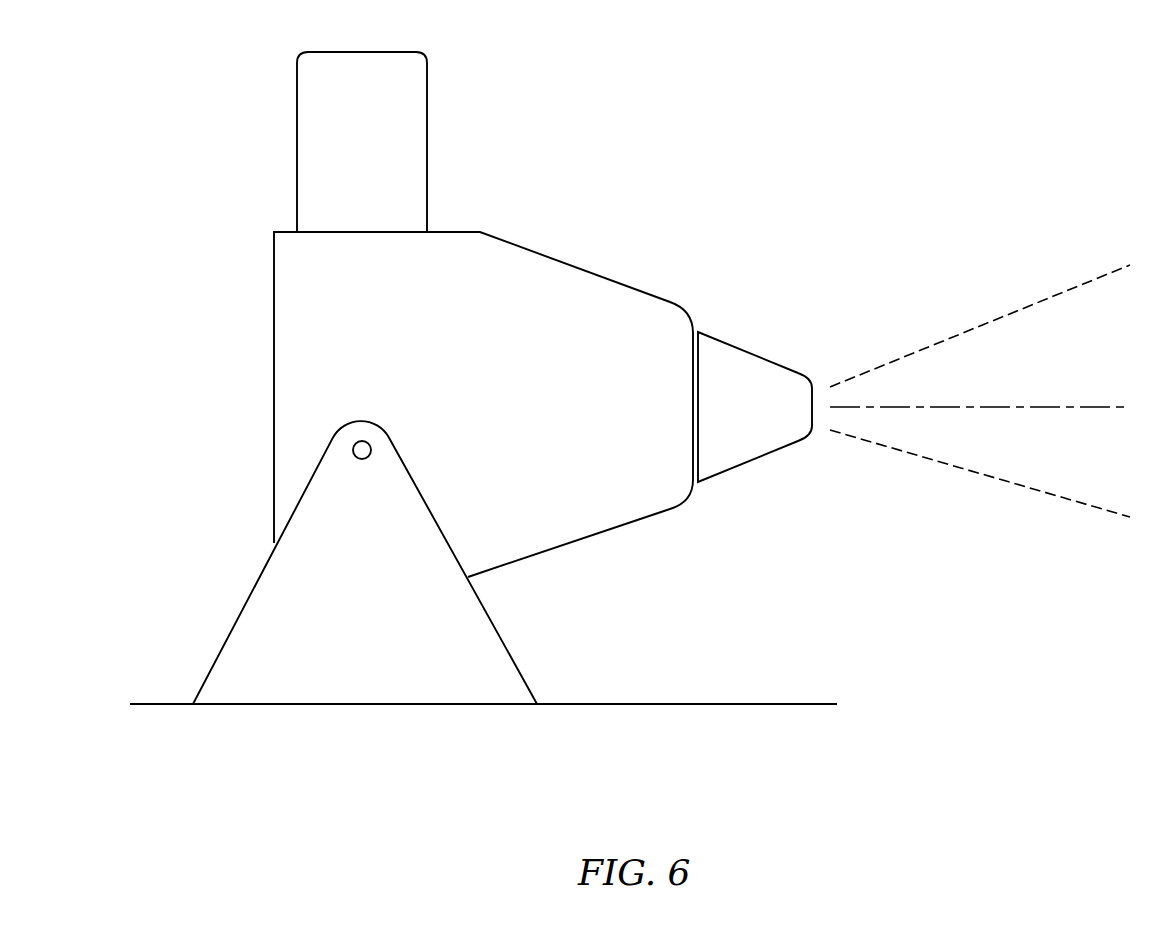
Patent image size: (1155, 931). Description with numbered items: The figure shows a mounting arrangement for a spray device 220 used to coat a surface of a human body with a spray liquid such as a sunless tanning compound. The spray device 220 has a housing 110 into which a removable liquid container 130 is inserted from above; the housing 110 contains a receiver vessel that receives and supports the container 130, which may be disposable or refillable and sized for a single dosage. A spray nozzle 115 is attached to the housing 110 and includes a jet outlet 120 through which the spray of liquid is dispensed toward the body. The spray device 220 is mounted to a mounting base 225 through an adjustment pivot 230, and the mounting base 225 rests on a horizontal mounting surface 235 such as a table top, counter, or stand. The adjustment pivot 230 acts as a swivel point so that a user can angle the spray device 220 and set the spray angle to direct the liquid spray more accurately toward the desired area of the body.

The spray device 220 is at (201, 127).
The removable liquid container 130 is at (397, 115).
The housing 110 is at (573, 488).
The spray nozzle 115 is at (725, 337).
The jet outlet 120 is at (820, 403).
The mounting base 225 is at (373, 627).
The adjustment pivot 230 is at (370, 443).
The mounting surface 235 is at (778, 703).